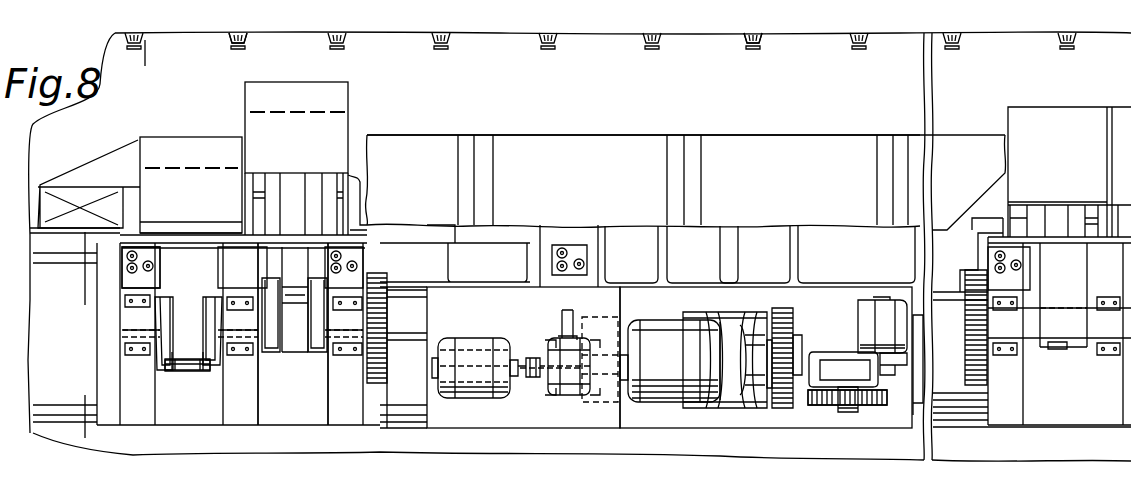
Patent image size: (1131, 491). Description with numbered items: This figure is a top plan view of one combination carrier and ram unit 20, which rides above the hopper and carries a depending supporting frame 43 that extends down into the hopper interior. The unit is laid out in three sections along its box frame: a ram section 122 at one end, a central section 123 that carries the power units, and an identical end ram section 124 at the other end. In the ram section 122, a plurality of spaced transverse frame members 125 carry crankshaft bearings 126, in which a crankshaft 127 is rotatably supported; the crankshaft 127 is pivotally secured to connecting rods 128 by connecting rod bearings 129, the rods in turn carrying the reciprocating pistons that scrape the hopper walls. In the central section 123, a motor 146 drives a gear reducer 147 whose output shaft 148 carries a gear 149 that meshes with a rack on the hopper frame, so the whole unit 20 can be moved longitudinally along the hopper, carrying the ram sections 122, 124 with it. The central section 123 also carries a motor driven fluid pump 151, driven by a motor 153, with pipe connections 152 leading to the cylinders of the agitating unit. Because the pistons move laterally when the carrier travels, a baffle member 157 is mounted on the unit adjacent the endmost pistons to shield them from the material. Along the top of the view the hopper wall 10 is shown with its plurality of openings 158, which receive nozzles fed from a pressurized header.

The hopper wall 10 is at (145, 47).
The combination carrier and ram unit 20 is at (669, 418).
The depending supporting frame 43 is at (733, 232).
The ram section 122 is at (283, 408).
The central section 123 is at (532, 368).
The end ram section 124 is at (1065, 408).
The transverse frame members 125 is at (150, 415).
The crankshaft bearings 126 is at (348, 340).
The crankshaft 127 is at (268, 340).
The connecting rods 128 is at (283, 262).
The connecting rod bearings 129 is at (196, 367).
The motor 146 is at (871, 300).
The gear reducer 147 is at (840, 352).
The output shaft 148 is at (842, 410).
The gear 149 is at (877, 408).
The motor driven fluid pump 151 is at (568, 390).
The pipe connections 152 is at (570, 312).
The motor 153 is at (478, 388).
The baffle member 157 is at (91, 165).
The openings 158 is at (240, 49).